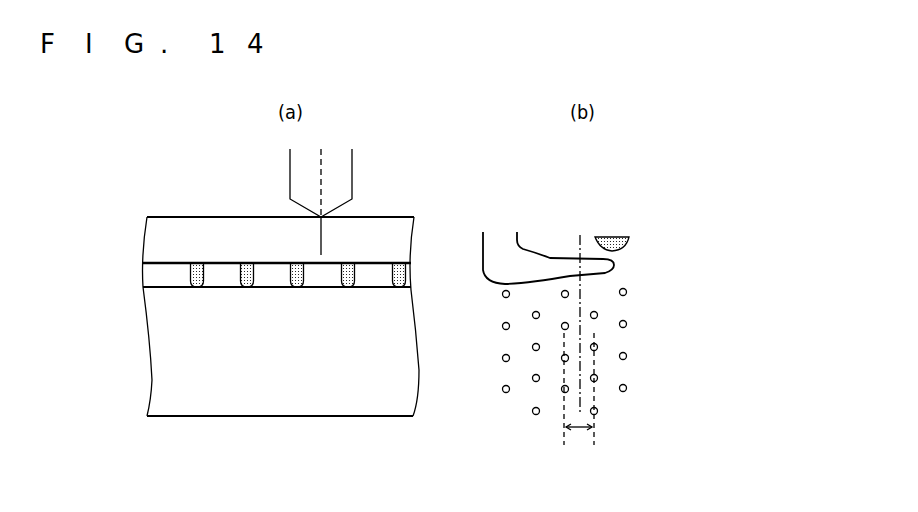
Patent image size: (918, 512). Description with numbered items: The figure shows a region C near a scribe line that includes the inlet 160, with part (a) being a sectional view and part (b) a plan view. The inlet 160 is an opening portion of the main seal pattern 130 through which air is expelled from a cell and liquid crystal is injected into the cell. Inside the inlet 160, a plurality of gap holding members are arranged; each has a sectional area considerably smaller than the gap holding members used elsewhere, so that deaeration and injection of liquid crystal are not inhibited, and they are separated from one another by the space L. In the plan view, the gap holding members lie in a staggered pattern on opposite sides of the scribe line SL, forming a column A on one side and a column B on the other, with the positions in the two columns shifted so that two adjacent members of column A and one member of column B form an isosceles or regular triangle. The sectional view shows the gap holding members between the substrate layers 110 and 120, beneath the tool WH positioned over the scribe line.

The substrate 110 is at (168, 359).
The upper layer 120 is at (170, 244).
The main seal pattern 130 is at (498, 240).
The inlet 160 is at (627, 373).
The tool WH is at (300, 175).
The scribe line SL is at (579, 310).
The space L is at (579, 397).
The region C is at (689, 343).